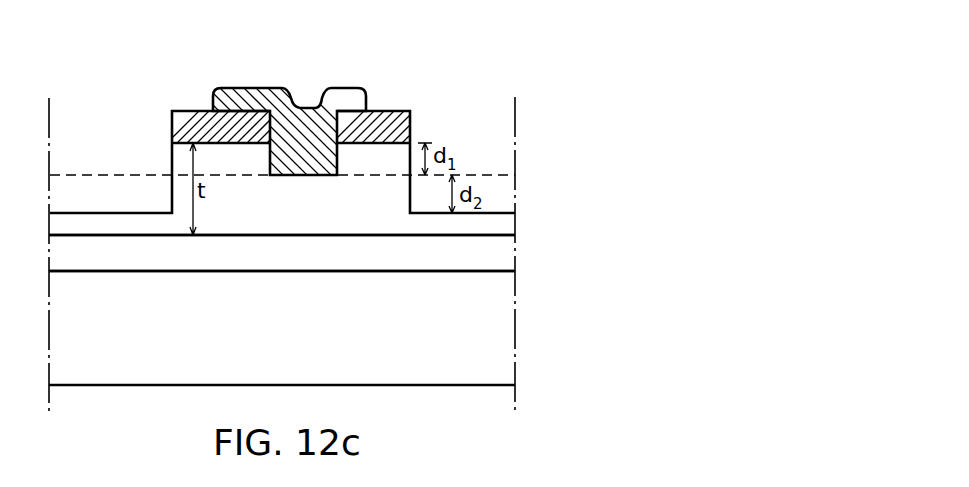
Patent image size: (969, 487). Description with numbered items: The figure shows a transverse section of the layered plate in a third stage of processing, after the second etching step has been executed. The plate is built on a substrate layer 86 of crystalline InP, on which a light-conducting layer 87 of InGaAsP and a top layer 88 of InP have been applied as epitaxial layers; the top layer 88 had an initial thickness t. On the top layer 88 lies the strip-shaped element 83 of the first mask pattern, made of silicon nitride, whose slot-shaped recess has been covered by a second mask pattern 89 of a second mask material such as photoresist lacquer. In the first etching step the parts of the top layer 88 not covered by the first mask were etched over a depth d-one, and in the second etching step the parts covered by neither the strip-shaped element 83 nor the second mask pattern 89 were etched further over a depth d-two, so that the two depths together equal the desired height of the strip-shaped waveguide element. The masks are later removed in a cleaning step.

The strip-shaped element 83 is at (200, 130).
The substrate layer 86 is at (483, 331).
The light-conducting layer 87 is at (477, 247).
The top layer 88 is at (488, 226).
The second mask pattern 89 is at (292, 89).